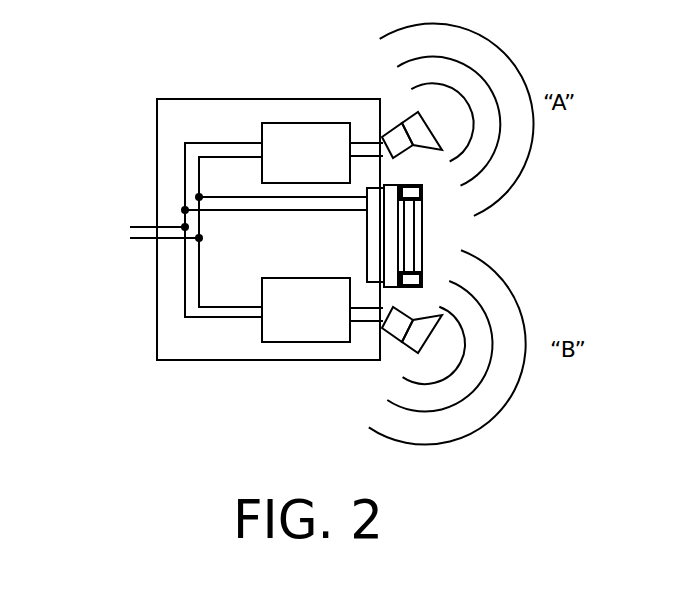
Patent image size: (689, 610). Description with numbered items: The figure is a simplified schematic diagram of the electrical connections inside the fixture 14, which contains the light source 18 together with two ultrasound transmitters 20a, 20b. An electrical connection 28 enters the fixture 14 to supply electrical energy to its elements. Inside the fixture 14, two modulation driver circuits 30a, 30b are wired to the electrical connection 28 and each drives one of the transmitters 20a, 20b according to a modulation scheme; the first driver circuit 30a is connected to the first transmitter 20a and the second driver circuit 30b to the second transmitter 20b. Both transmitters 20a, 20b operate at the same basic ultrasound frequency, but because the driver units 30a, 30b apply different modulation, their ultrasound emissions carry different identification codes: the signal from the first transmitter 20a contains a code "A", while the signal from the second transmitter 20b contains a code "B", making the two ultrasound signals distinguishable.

The fixture 14 is at (218, 84).
The light source 18 is at (422, 240).
The first ultrasound transmitter 20a is at (408, 112).
The second ultrasound transmitter 20b is at (417, 350).
The electrical connection 28 is at (130, 232).
The first modulation driver circuit 30a is at (322, 153).
The second modulation driver circuit 30b is at (322, 310).